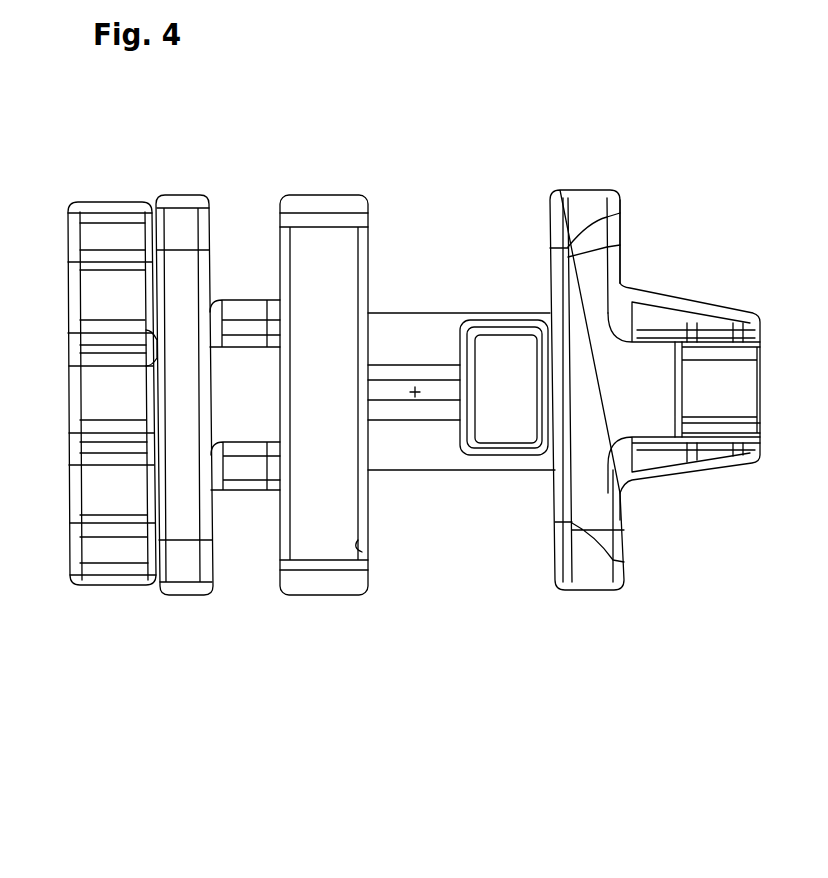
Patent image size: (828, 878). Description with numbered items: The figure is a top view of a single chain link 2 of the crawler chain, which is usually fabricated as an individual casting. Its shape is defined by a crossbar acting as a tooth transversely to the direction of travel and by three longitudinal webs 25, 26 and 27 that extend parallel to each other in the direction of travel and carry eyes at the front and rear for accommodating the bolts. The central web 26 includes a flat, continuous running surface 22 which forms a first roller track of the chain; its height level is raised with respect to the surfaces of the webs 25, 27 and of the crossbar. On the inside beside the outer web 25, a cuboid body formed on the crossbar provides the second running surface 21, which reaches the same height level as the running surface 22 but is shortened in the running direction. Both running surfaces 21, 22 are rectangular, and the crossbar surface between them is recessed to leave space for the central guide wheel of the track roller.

The chain link 2 is at (222, 714).
The second running surface 21 is at (505, 427).
The running surface 22 is at (360, 543).
The outer web 25 is at (590, 205).
The central web 26 is at (340, 205).
The web 27 is at (175, 192).